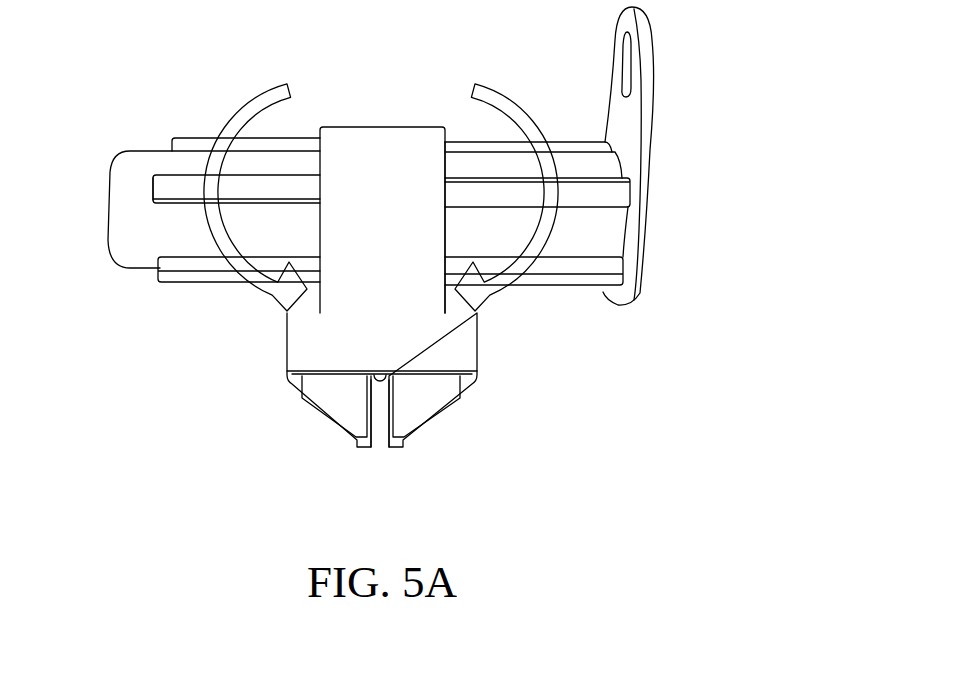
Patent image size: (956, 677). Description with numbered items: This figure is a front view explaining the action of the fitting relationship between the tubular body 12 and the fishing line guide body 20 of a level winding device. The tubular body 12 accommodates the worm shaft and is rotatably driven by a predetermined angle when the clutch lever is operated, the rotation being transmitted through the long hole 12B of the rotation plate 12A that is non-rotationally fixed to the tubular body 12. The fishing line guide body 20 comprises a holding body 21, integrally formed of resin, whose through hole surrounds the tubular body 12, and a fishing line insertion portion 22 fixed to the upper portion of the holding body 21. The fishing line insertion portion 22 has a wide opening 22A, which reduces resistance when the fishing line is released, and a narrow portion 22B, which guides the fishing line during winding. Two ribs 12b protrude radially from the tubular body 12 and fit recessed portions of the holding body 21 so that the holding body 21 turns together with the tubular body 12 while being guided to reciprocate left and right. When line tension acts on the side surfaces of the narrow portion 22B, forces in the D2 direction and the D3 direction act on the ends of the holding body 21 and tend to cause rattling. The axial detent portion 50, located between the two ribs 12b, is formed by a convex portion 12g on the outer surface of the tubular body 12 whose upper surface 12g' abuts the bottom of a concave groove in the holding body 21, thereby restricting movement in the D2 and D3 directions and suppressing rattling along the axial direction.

The tubular body 12 is at (140, 165).
The rib 12b is at (193, 145).
The convex portion 12g is at (391, 128).
The upper surface of the convex portion 12g' is at (101, 214).
The rotation plate 12A is at (645, 77).
The long hole 12B is at (626, 65).
The fishing line guide body 20 is at (463, 268).
The holding body 21 is at (366, 158).
The fishing line insertion portion 22 is at (390, 408).
The opening 22A is at (335, 403).
The narrow portion 22B is at (388, 415).
The axial detent portion 50 is at (458, 166).
The D2 direction D2 is at (255, 187).
The D3 direction D3 is at (506, 187).